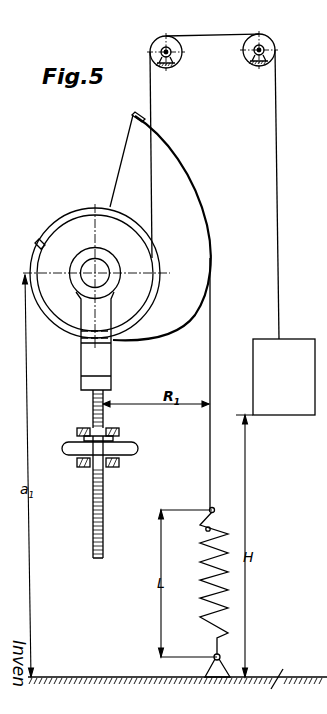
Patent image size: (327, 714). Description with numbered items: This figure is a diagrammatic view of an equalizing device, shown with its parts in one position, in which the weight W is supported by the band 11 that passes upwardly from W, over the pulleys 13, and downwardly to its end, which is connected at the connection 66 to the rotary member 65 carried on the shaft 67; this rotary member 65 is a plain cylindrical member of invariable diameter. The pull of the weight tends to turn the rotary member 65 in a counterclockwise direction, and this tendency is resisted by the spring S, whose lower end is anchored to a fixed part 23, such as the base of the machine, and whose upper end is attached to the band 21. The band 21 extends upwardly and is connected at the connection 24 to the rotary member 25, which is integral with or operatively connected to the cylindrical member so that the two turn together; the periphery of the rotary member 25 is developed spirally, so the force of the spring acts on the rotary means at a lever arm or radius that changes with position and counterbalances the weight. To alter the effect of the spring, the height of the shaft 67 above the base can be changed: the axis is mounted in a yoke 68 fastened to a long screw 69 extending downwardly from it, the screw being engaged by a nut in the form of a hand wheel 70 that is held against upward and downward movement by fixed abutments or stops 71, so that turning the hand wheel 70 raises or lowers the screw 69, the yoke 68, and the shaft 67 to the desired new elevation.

The band 11 is at (280, 104).
The pulleys 13 is at (243, 58).
The band 21 is at (214, 325).
The fixed part 23 is at (281, 672).
The connection 24 is at (133, 116).
The rotary member 25 is at (181, 153).
The rotary member 65 is at (70, 225).
The connection 66 is at (36, 246).
The shaft 67 is at (83, 285).
The yoke 68 is at (82, 356).
The screw 69 is at (93, 515).
The hand wheel 70 is at (128, 449).
The stops 71 is at (78, 431).